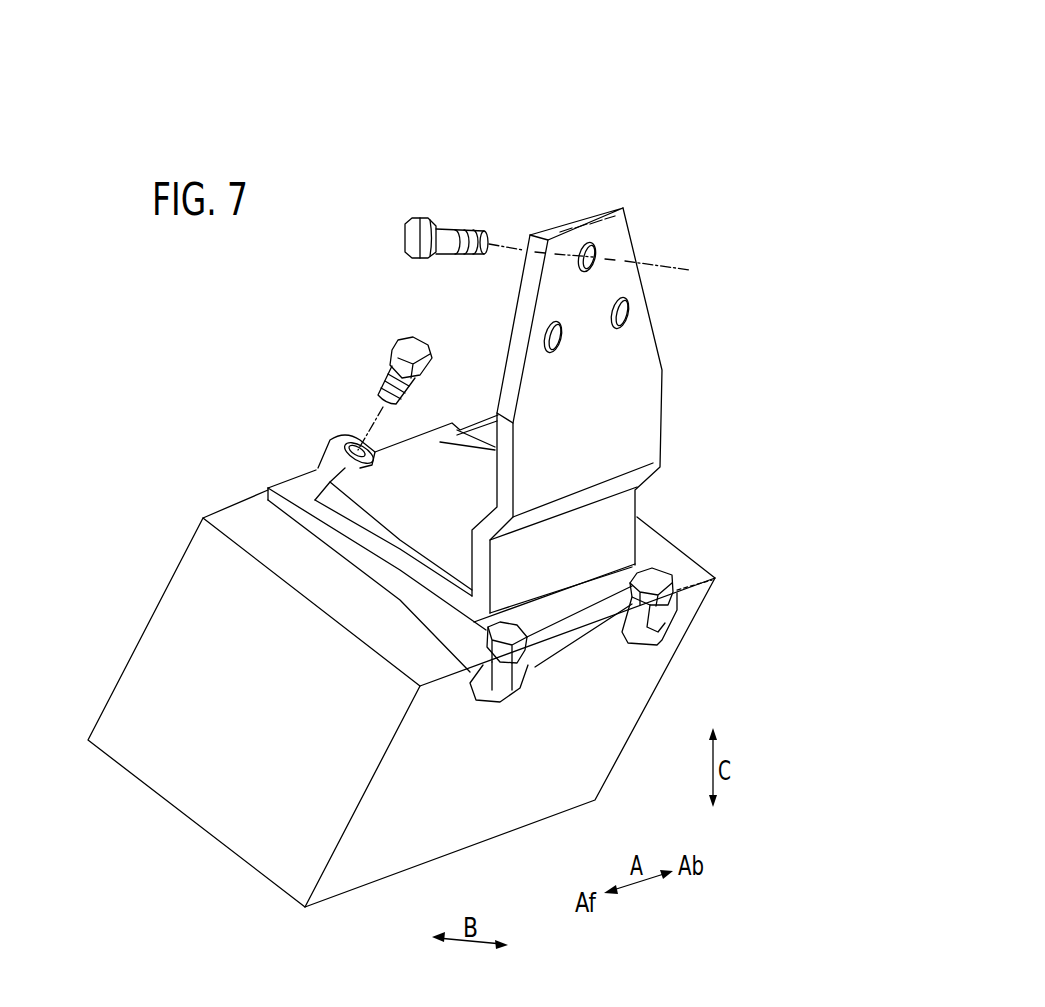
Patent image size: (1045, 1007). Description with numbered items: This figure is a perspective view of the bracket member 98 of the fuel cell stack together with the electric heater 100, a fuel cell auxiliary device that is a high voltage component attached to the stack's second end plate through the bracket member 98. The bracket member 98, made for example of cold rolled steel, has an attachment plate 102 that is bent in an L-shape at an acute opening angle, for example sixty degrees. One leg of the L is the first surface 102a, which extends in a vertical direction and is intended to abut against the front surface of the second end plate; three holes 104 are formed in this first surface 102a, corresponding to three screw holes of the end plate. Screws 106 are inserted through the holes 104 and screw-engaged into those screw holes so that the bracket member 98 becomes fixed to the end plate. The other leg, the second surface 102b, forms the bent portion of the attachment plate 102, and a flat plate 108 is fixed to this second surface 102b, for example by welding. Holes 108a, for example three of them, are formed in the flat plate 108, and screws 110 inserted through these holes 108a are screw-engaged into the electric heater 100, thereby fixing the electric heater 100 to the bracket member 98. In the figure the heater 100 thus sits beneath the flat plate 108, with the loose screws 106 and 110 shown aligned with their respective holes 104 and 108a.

The bracket member 98 is at (466, 386).
The electric heater 100 is at (194, 805).
The attachment plate 102 is at (461, 386).
The first surface 102a is at (610, 415).
The second surface 102b is at (387, 490).
The holes 104 is at (596, 250).
The screws 106 is at (405, 234).
The flat plate 108 is at (367, 514).
The holes 108a is at (365, 448).
The screws 110 is at (420, 338).